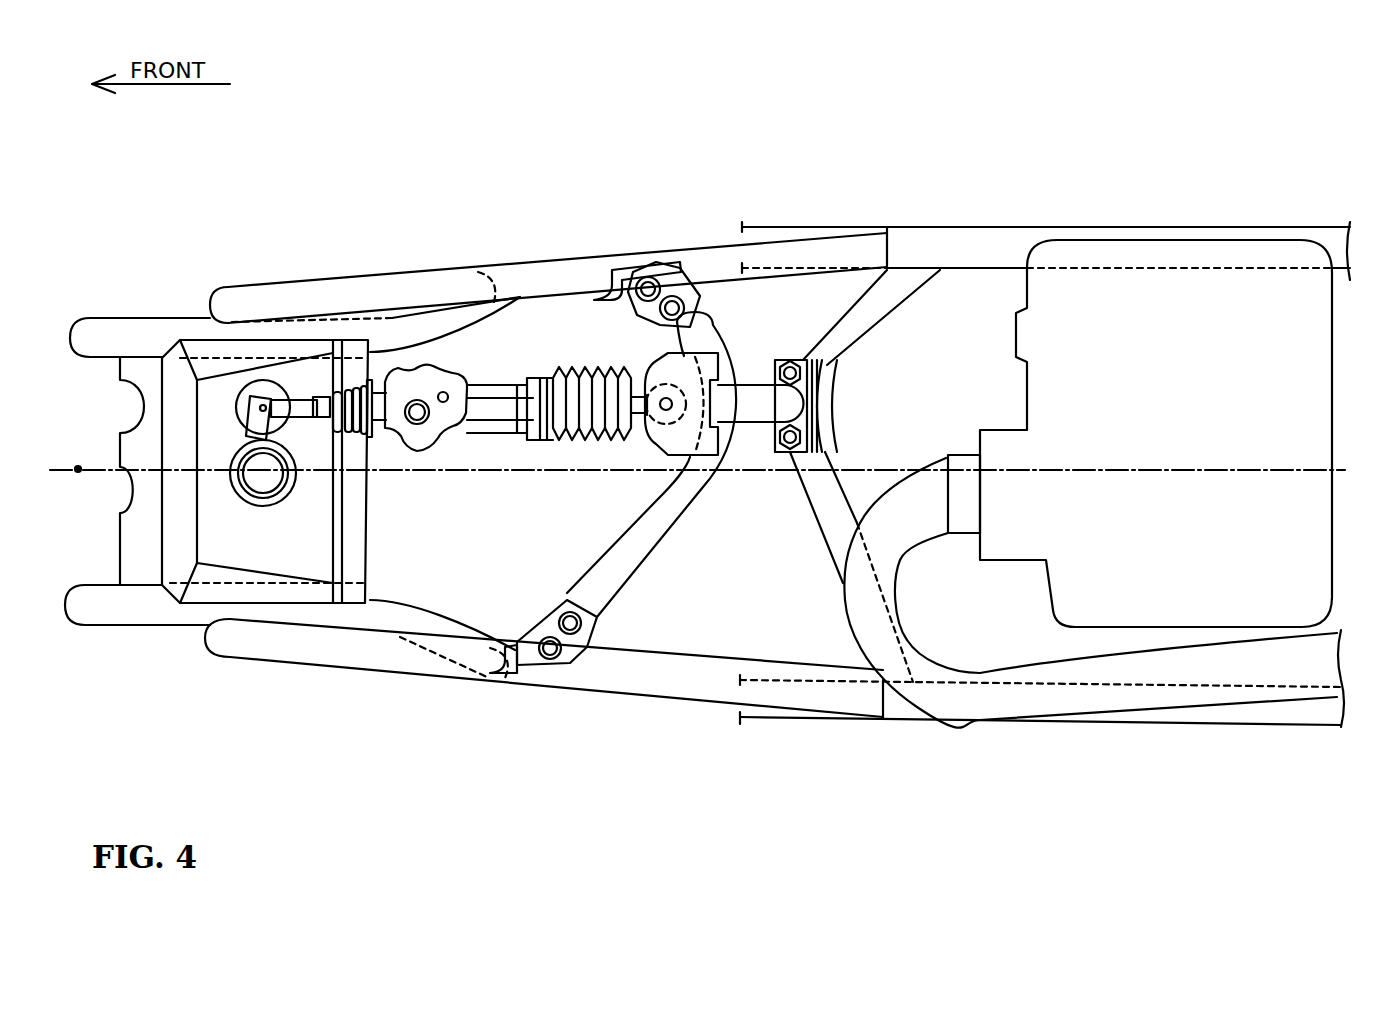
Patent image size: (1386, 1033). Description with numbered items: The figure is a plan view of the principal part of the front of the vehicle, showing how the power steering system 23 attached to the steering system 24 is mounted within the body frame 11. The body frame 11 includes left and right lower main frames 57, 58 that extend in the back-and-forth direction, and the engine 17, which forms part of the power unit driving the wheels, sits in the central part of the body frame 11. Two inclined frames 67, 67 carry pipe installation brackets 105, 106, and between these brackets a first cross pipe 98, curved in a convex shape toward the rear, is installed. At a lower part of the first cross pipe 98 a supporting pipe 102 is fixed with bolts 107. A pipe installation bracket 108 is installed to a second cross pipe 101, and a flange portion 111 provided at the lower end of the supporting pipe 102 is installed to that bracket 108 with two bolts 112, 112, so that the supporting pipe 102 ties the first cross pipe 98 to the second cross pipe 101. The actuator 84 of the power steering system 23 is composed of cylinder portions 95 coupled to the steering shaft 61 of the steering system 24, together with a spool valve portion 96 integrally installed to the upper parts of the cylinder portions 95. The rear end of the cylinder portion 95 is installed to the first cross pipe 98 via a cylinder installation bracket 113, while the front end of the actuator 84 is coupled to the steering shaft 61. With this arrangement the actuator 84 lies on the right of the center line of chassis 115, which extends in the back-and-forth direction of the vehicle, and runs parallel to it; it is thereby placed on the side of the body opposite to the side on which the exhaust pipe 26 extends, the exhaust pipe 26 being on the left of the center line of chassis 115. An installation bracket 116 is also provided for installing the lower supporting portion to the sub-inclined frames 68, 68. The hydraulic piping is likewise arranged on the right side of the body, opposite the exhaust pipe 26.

The body frame 11 is at (280, 274).
The engine 17 is at (1225, 240).
The power steering system 23 is at (524, 342).
The steering system 24 is at (290, 515).
The exhaust pipe 26 is at (848, 633).
The lower main frame 57 is at (1110, 722).
The lower main frame 58 is at (1087, 227).
The steering shaft 61 is at (263, 506).
The inclined frame 67 is at (372, 272).
The sub-inclined frame 68 is at (137, 318).
The actuator 84 is at (480, 362).
The cylinder portion 95 is at (483, 462).
The spool valve portion 96 is at (380, 472).
The first cross pipe 98 is at (673, 530).
The second cross pipe 101 is at (873, 330).
The supporting pipe 102 is at (751, 424).
The pipe installation bracket 105 is at (517, 675).
The pipe installation bracket 106 is at (628, 268).
The bolt 107 is at (675, 298).
The pipe installation bracket 108 is at (827, 367).
The flange portion 111 is at (772, 377).
The bolt 112 is at (785, 360).
The cylinder installation bracket 113 is at (655, 452).
The center line of chassis 115 is at (77, 473).
The installation bracket 116 is at (193, 603).